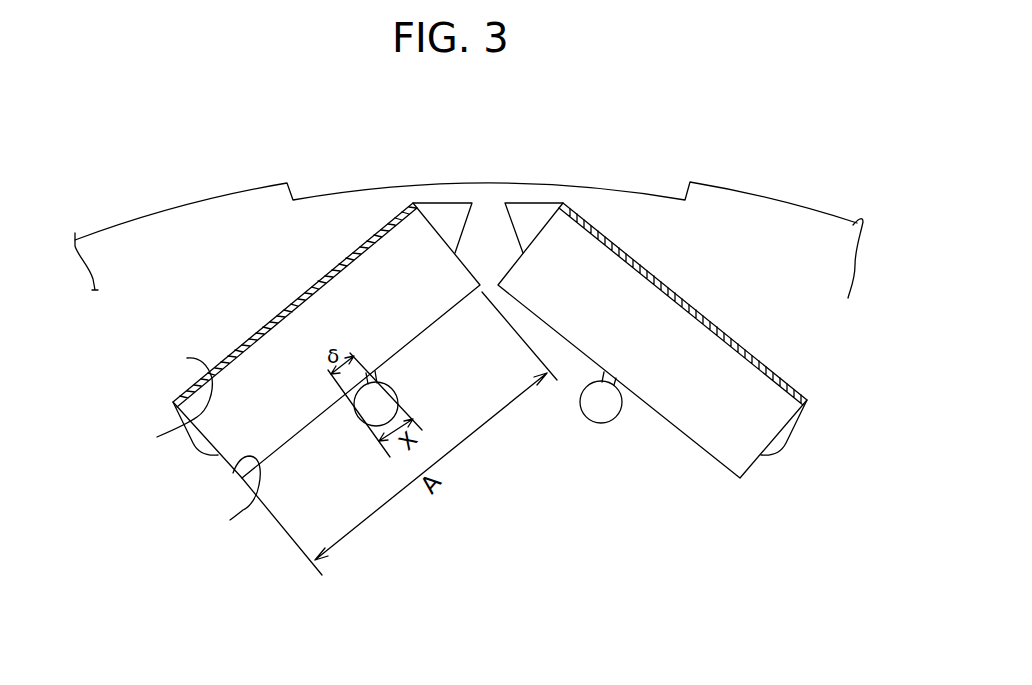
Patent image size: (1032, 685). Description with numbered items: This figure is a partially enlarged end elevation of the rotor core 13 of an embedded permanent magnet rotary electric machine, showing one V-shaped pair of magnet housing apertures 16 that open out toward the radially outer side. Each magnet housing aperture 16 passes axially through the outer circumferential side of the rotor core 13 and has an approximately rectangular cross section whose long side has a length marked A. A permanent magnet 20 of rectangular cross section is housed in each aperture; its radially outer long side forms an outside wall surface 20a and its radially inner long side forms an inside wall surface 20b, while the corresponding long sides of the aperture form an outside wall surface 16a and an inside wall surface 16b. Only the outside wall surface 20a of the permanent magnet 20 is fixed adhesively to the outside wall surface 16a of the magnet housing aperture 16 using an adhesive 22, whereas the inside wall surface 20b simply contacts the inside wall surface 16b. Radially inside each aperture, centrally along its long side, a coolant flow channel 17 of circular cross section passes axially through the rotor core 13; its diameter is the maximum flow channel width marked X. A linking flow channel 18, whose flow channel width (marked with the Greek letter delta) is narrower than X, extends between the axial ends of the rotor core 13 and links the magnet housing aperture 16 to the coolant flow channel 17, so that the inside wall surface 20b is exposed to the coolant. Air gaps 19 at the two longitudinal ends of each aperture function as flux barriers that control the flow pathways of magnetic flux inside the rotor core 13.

The rotor core 13 is at (800, 222).
The magnet housing aperture 16 is at (703, 448).
The outside wall surface 16a is at (187, 358).
The inside wall surface 16b is at (243, 510).
The coolant flow channel 17 is at (598, 418).
The linking flow channel 18 is at (618, 391).
The air gap 19 is at (533, 217).
The permanent magnet 20 is at (664, 302).
The outside wall surface 20a is at (180, 427).
The inside wall surface 20b is at (233, 473).
The adhesive 22 is at (617, 251).